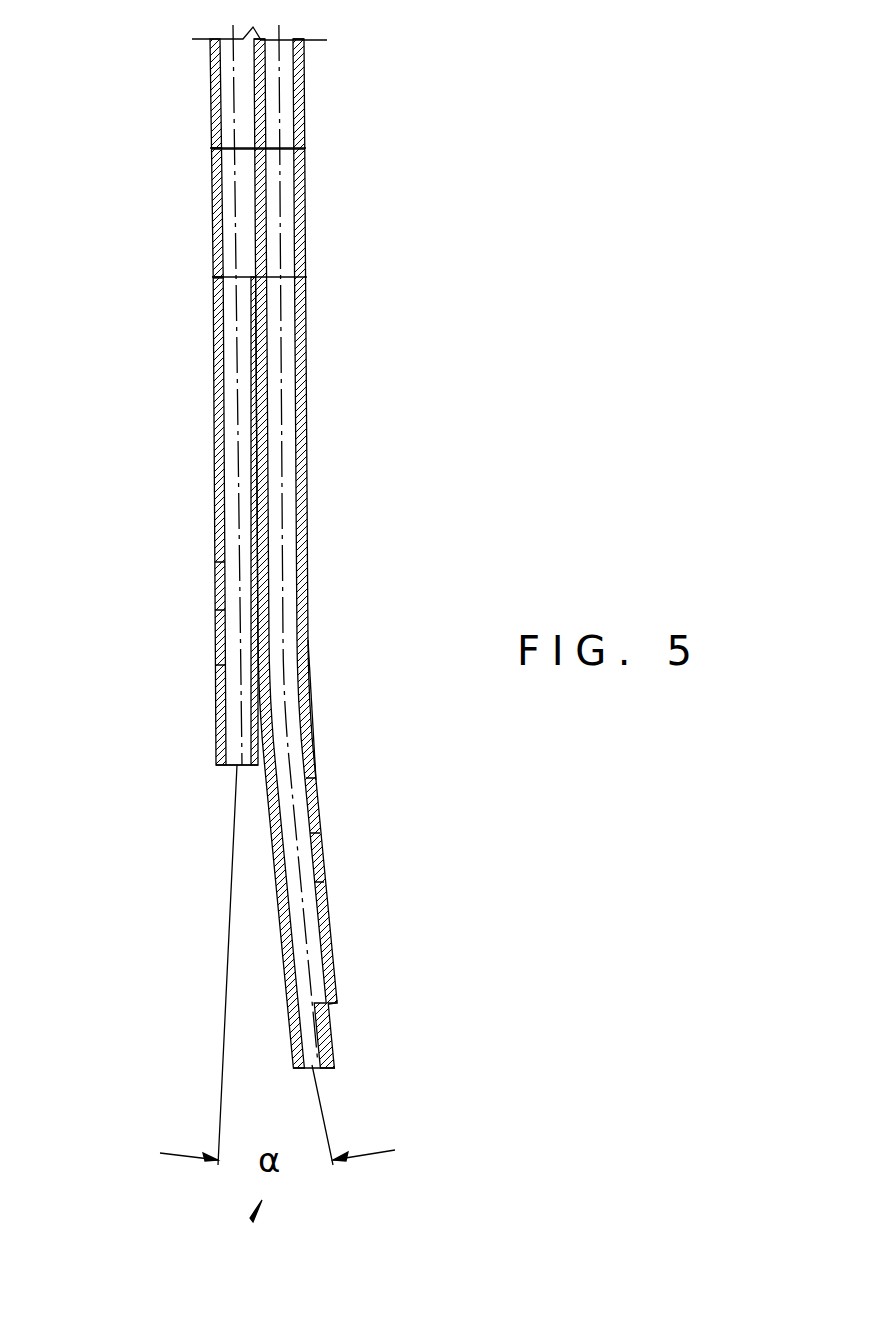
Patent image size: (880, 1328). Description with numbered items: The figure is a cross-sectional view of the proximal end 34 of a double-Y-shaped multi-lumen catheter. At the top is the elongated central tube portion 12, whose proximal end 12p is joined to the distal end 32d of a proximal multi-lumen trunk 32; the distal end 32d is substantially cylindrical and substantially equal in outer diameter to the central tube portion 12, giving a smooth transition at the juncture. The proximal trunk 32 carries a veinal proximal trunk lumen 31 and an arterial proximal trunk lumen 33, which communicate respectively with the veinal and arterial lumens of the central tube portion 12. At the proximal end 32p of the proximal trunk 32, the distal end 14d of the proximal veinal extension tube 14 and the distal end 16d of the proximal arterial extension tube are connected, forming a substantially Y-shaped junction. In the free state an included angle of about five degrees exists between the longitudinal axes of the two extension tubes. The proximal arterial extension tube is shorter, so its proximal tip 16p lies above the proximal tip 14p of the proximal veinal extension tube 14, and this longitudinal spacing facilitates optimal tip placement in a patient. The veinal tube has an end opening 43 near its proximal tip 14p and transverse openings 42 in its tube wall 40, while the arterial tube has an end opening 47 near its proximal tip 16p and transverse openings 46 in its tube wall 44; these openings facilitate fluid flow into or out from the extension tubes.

The central tube portion 12 is at (304, 80).
The proximal end of the central tube portion 12p is at (212, 145).
The proximal multi-lumen trunk 32 is at (304, 197).
The distal end of the proximal trunk 32d is at (212, 155).
The proximal end of the proximal trunk 32p is at (212, 268).
The arterial proximal trunk lumen 33 is at (233, 217).
The veinal proximal trunk lumen 31 is at (288, 220).
The distal end of the proximal arterial extension tube 16d is at (212, 290).
The distal end of the proximal veinal extension tube 14d is at (304, 285).
The proximal veinal extension tube 14 is at (308, 483).
The tube wall 40 is at (313, 738).
The transverse openings 42 is at (324, 882).
The end opening 43 is at (318, 1077).
The proximal tip of the proximal veinal extension tube 14p is at (342, 1062).
The tube wall 44 is at (218, 523).
The transverse openings 46 is at (218, 665).
The proximal tip of the proximal arterial extension tube 16p is at (215, 763).
The end opening 47 is at (228, 770).
The proximal end 34 is at (252, 1216).